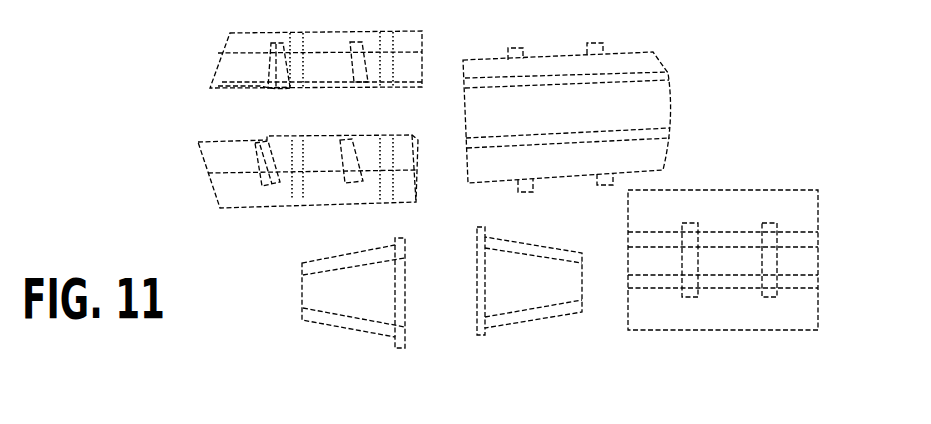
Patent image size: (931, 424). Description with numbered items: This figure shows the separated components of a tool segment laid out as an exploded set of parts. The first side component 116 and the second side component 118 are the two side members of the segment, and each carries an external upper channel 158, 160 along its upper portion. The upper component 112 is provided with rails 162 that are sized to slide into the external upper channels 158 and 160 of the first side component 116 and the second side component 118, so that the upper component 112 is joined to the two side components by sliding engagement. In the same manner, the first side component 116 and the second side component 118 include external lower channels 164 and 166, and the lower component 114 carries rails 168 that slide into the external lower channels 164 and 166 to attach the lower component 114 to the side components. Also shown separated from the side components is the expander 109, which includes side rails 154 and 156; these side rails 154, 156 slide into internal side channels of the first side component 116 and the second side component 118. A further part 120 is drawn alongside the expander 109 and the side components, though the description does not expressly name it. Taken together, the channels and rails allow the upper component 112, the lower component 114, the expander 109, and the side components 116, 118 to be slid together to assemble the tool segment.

The expander 109 is at (337, 310).
The upper component 112 is at (582, 104).
The lower component 114 is at (739, 289).
The first side component 116 is at (290, 44).
The second side component 118 is at (270, 199).
The second side panel 120 is at (541, 300).
The side rail 154 is at (400, 347).
The side rail 156 is at (480, 335).
The external upper channel 158 is at (280, 38).
The external upper channel 160 is at (267, 188).
The rails 162 is at (517, 47).
The external lower channel 164 is at (387, 32).
The external lower channel 166 is at (387, 198).
The rails 168 is at (692, 298).